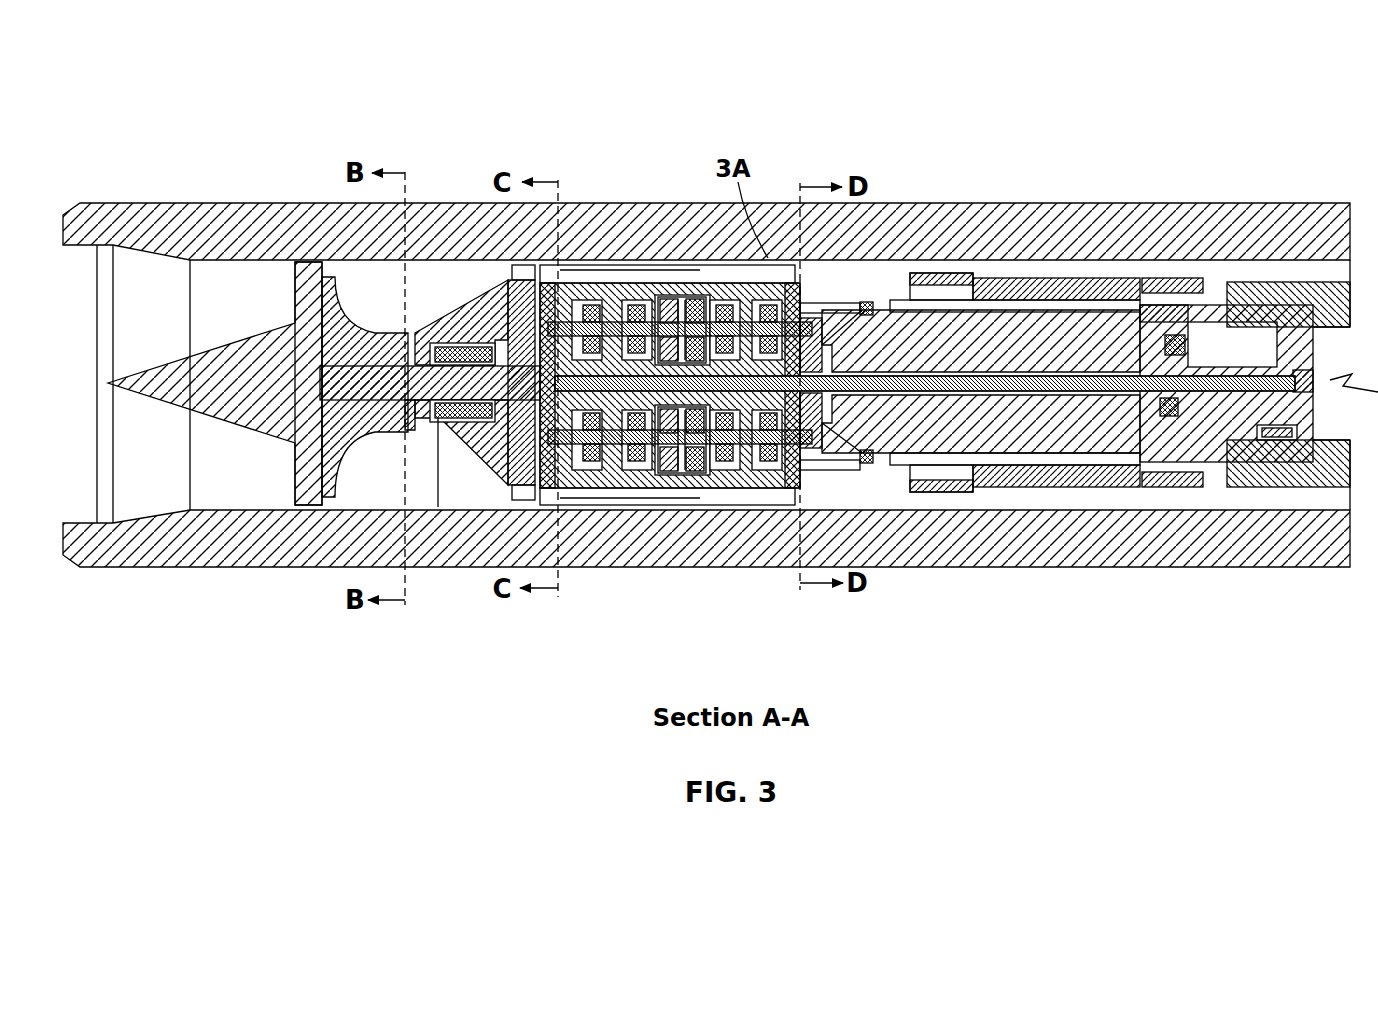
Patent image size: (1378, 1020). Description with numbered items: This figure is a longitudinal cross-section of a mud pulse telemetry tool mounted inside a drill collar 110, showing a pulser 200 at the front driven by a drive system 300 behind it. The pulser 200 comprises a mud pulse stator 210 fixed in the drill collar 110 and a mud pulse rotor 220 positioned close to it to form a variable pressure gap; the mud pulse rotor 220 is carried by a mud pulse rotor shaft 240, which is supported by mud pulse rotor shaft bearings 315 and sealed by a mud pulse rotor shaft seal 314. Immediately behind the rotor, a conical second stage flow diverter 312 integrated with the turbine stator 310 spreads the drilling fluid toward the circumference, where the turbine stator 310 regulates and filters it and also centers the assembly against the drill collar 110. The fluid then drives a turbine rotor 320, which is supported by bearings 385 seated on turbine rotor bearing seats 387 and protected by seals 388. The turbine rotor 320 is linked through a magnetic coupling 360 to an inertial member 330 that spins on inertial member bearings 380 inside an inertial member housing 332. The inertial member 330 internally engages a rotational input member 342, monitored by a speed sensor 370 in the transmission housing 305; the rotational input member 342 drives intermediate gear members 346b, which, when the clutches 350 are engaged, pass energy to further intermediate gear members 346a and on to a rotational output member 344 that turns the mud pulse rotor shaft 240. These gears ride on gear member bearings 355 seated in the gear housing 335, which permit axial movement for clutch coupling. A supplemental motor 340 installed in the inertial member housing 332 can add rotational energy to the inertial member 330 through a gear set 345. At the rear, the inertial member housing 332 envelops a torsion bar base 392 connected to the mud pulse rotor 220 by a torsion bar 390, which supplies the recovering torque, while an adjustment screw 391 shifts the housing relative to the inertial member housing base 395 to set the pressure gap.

The drill collar 110 is at (213, 553).
The pulser 200 is at (222, 685).
The mud pulse stator 210 is at (290, 278).
The mud pulse rotor 220 is at (343, 313).
The mud pulse rotor shaft 240 is at (432, 383).
The drive system 300 is at (908, 683).
The transmission housing 305 is at (470, 305).
The turbine stator 310 is at (523, 290).
The second stage flow diverter 312 is at (400, 435).
The mud pulse rotor shaft seal 314 is at (440, 418).
The mud pulse rotor shaft bearings 315 is at (465, 337).
The turbine rotor 320 is at (1058, 262).
The inertial member 330 is at (892, 305).
The inertial member housing 332 is at (1290, 300).
The gear housing 335 is at (607, 303).
The supplemental motor 340 is at (1263, 307).
The rotational input member 342 is at (852, 322).
The rotational output member 344 is at (545, 455).
The gear set 345 is at (1175, 345).
The intermediate gear members 346a is at (560, 470).
The intermediate gear members 346b is at (797, 458).
The clutches 350 is at (688, 283).
The gear member bearings 355 is at (590, 455).
The magnetic coupling 360 is at (1117, 310).
The speed sensor 370 is at (807, 457).
The inertial member bearings 380 is at (868, 468).
The bearings 385 is at (935, 300).
The turbine rotor bearing seats 387 is at (930, 272).
The seals 388 is at (1222, 340).
The torsion bar 390 is at (1197, 396).
The adjustment screw 391 is at (1275, 435).
The torsion bar base 392 is at (1307, 413).
The inertial member housing base 395 is at (1307, 313).